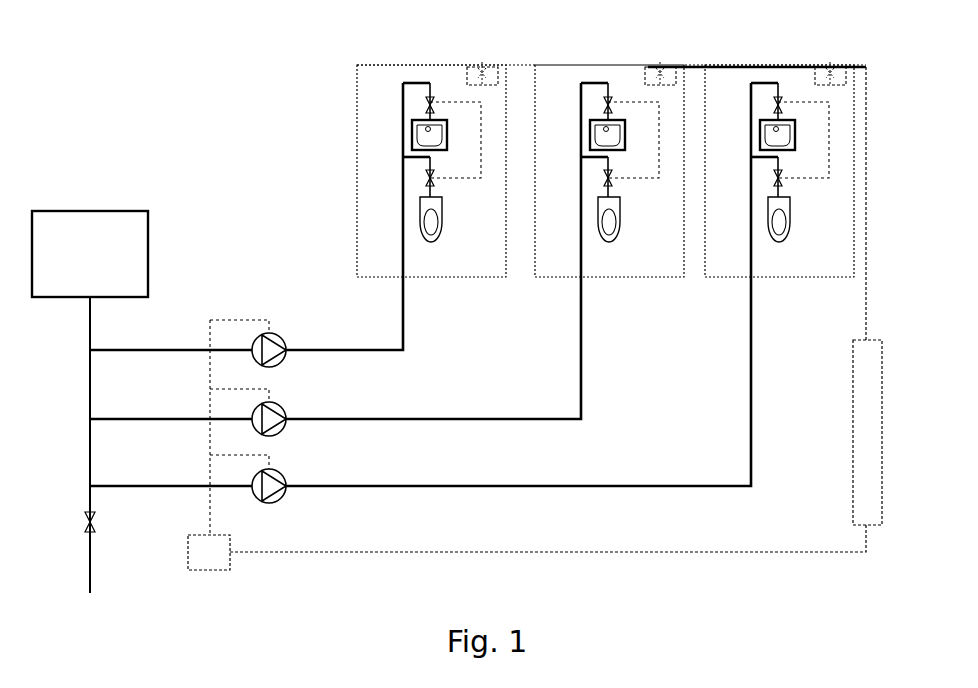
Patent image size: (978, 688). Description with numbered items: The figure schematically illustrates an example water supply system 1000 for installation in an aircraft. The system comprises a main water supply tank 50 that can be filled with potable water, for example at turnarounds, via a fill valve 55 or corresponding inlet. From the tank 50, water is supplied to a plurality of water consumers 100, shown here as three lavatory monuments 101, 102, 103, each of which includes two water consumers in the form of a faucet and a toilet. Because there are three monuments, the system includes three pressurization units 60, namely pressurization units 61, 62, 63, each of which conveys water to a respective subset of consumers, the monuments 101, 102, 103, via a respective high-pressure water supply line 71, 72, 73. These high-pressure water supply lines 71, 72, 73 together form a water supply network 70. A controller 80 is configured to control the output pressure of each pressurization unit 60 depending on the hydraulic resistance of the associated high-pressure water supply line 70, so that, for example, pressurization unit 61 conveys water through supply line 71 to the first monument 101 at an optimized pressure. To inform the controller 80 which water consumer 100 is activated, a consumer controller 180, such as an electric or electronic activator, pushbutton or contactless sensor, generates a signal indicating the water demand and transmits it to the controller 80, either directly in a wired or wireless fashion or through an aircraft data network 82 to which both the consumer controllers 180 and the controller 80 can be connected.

The water supply system 1000 is at (256, 124).
The main water supply tank 50 is at (90, 225).
The fill valve 55 is at (85, 521).
The pressurization unit 60 is at (265, 314).
The pressurization unit 61 is at (285, 340).
The pressurization unit 62 is at (285, 409).
The pressurization unit 63 is at (285, 476).
The water supply network 70 is at (522, 500).
The high-pressure water supply line 71 is at (406, 338).
The high-pressure water supply line 72 is at (583, 406).
The high-pressure water supply line 73 is at (756, 477).
The controller 80 is at (212, 566).
The aircraft data network 82 is at (870, 507).
The water consumer 100 is at (350, 95).
The monument 101 is at (356, 185).
The monument 102 is at (642, 278).
The monument 103 is at (818, 278).
The consumer controller 180 is at (660, 67).